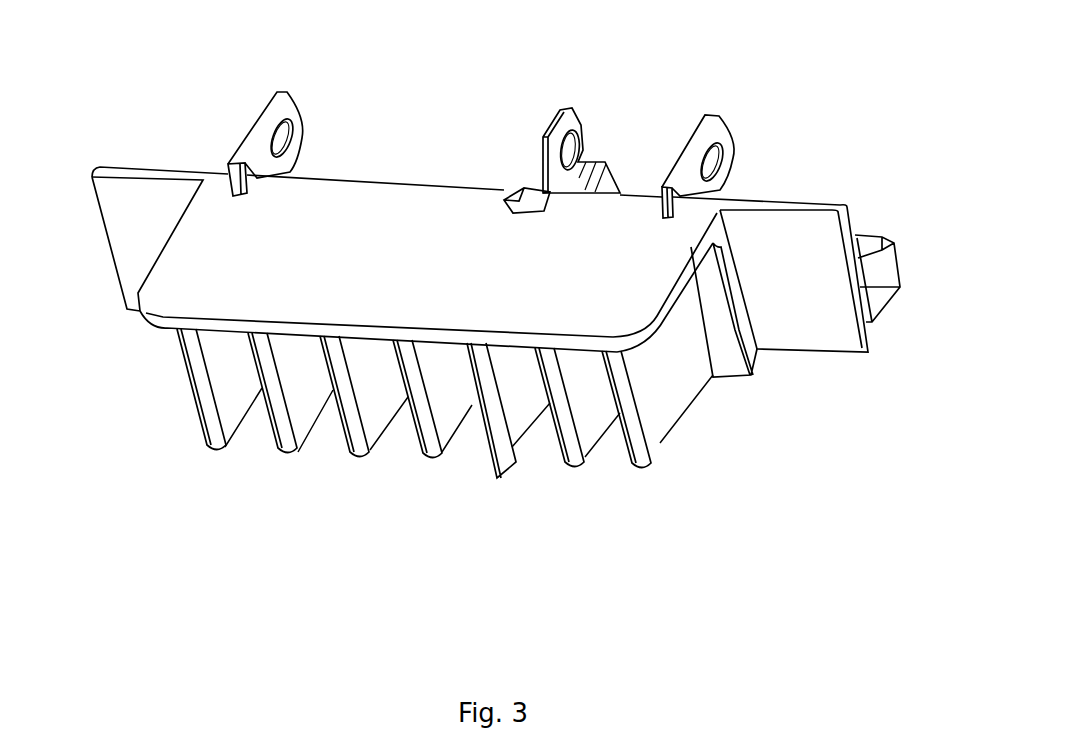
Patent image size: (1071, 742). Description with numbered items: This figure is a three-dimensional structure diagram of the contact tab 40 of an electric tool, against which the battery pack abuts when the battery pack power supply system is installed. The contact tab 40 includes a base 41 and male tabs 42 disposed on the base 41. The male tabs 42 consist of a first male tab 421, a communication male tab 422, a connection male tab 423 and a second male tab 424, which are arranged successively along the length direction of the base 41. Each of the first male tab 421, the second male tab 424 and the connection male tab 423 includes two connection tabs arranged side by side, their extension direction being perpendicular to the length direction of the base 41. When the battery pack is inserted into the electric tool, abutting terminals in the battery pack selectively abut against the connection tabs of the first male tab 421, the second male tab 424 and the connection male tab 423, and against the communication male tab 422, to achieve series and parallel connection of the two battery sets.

The contact tab 40 is at (366, 125).
The base 41 is at (397, 223).
The male tabs 42 is at (285, 548).
The first male tab 421 is at (657, 420).
The communication male tab 422 is at (517, 440).
The connection male tab 423 is at (447, 418).
The second male tab 424 is at (305, 400).